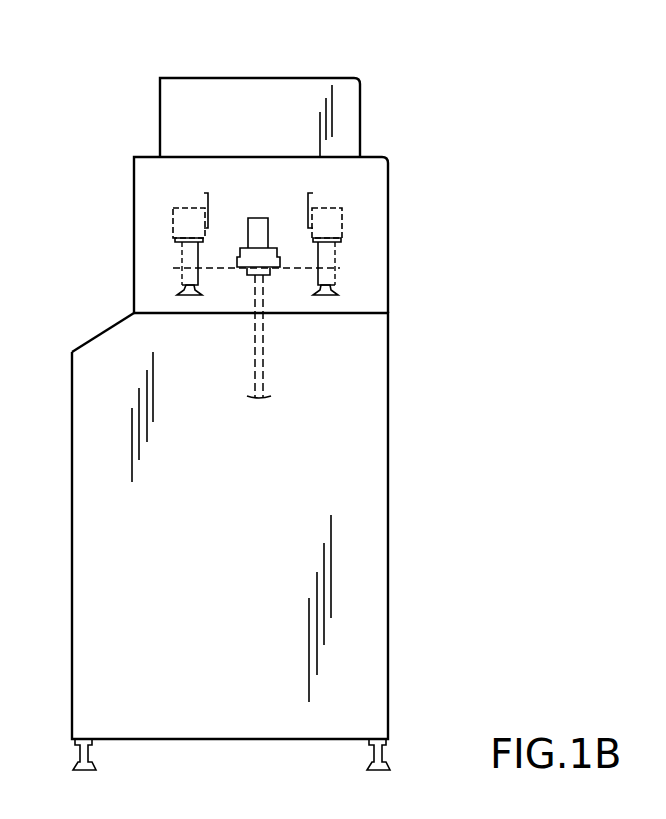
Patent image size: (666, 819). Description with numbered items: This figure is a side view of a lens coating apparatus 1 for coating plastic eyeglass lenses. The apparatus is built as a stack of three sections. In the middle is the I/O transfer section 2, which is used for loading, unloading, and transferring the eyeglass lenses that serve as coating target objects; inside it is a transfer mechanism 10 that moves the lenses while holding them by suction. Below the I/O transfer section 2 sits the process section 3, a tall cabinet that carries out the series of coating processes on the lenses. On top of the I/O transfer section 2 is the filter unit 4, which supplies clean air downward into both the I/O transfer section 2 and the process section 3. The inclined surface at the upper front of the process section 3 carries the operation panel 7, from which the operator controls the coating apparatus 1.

The coating apparatus 1 is at (383, 86).
The I/O transfer section 2 is at (147, 207).
The process section 3 is at (98, 566).
The filter unit 4 is at (265, 77).
The operation panel 7 is at (120, 318).
The transfer mechanism 10 is at (343, 218).